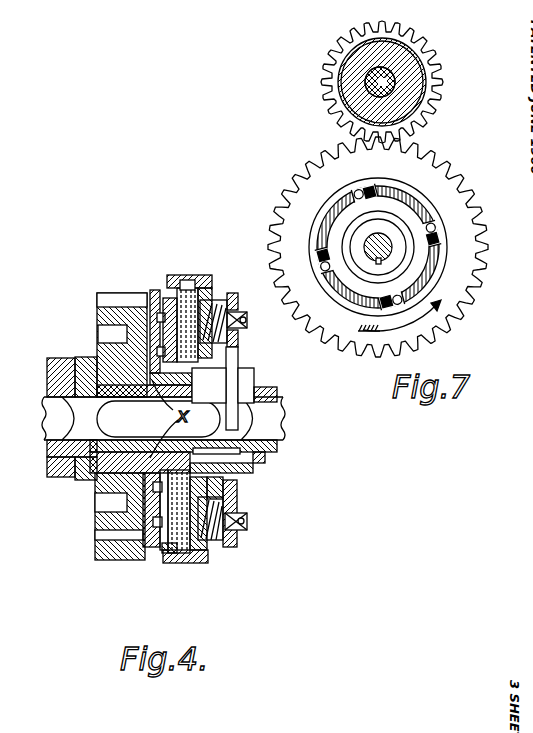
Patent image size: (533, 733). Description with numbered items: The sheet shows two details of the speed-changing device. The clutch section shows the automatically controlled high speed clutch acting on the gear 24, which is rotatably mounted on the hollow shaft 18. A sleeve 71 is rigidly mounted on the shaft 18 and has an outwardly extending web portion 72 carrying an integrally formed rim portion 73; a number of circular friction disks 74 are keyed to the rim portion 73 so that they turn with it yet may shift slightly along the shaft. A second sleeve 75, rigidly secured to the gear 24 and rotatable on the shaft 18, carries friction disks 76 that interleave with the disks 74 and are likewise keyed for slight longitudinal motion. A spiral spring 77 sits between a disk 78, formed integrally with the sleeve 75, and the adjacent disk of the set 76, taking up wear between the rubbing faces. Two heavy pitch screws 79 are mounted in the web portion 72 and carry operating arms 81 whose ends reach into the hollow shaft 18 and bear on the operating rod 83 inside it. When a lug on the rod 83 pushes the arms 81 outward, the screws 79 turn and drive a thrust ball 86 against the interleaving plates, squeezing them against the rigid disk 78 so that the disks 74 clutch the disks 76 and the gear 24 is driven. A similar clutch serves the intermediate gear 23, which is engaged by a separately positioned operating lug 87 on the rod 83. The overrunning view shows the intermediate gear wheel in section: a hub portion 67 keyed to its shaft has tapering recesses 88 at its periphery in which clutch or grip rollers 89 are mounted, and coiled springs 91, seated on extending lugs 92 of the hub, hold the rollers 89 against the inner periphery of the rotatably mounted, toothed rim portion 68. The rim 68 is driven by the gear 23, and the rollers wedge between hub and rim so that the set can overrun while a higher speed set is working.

In FIG. 7, the shaft 18 is at (372, 86).
In FIG. 4, the shaft 18 is at (92, 446).
In FIG. 7, the intermediate gear 23 is at (415, 72).
In FIG. 4, the high speed gear 24 is at (110, 310).
In FIG. 7, the hub portion 67 is at (407, 220).
In FIG. 7, the rim portion 68 is at (453, 290).
In FIG. 4, the sleeve 71 is at (253, 473).
In FIG. 4, the web portion 72 is at (213, 483).
In FIG. 4, the rim portion 73 is at (199, 283).
In FIG. 4, the friction disks 74 is at (173, 300).
In FIG. 4, the sleeve 75 is at (152, 295).
In FIG. 4, the friction disks 76 is at (185, 282).
In FIG. 4, the spiral spring 77 is at (163, 545).
In FIG. 4, the disk 78 is at (148, 545).
In FIG. 4, the heavy pitch screws 79 is at (217, 310).
In FIG. 4, the operating arms 81 is at (239, 364).
In FIG. 4, the operating rod 83 is at (246, 438).
In FIG. 4, the thrust ball 86 is at (245, 418).
In FIG. 4, the operating lug 87 is at (66, 357).
In FIG. 7, the tapering recesses 88 is at (345, 192).
In FIG. 7, the clutch rollers 89 is at (362, 190).
In FIG. 7, the coiled springs 91 is at (378, 196).
In FIG. 7, the lugs 92 is at (381, 192).